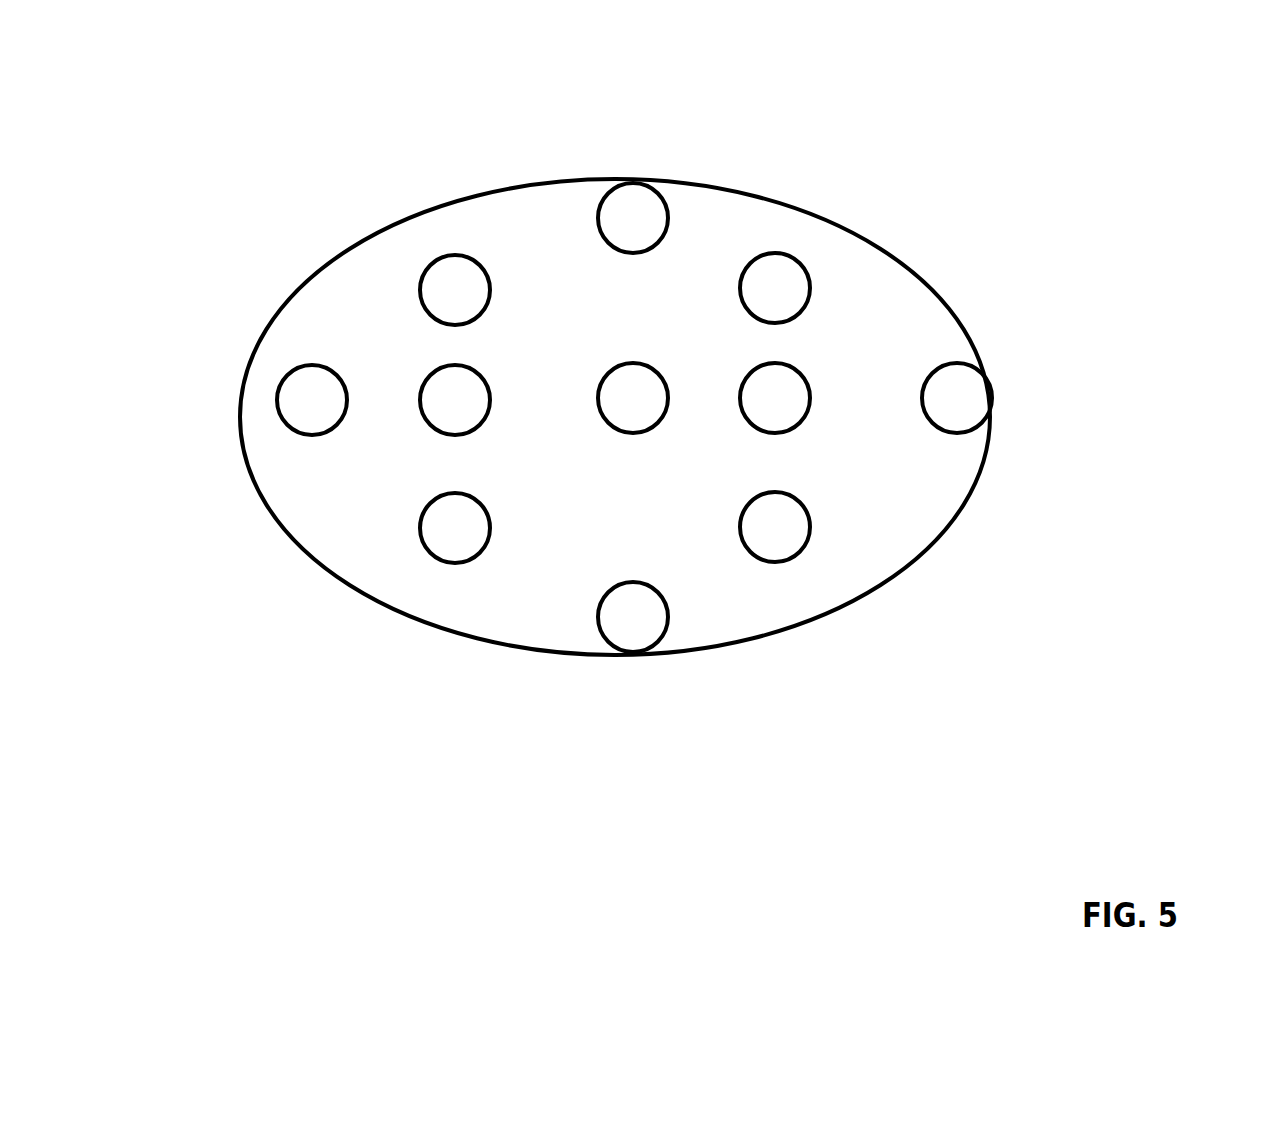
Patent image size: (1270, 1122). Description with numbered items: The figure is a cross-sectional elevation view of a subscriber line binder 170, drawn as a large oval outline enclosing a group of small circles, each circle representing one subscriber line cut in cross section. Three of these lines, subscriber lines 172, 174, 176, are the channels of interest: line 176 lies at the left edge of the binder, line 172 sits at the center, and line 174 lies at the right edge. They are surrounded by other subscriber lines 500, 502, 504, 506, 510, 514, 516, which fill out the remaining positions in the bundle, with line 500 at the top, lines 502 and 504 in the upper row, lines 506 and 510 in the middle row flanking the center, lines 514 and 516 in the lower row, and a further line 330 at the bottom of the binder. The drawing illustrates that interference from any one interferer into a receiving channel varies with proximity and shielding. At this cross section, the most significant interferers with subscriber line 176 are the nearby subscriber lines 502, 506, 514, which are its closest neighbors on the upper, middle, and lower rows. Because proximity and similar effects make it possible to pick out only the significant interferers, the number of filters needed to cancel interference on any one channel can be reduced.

The subscriber line binder 170 is at (1028, 162).
The subscriber line 172 is at (615, 403).
The subscriber line 174 is at (958, 380).
The subscriber line 176 is at (310, 398).
The bottom gas outlet hole 330 is at (643, 633).
The subscriber line 500 is at (625, 212).
The subscriber line 502 is at (448, 275).
The subscriber line 504 is at (785, 292).
The subscriber line 506 is at (450, 410).
The subscriber line 510 is at (803, 407).
The subscriber line 514 is at (450, 522).
The subscriber line 516 is at (780, 542).